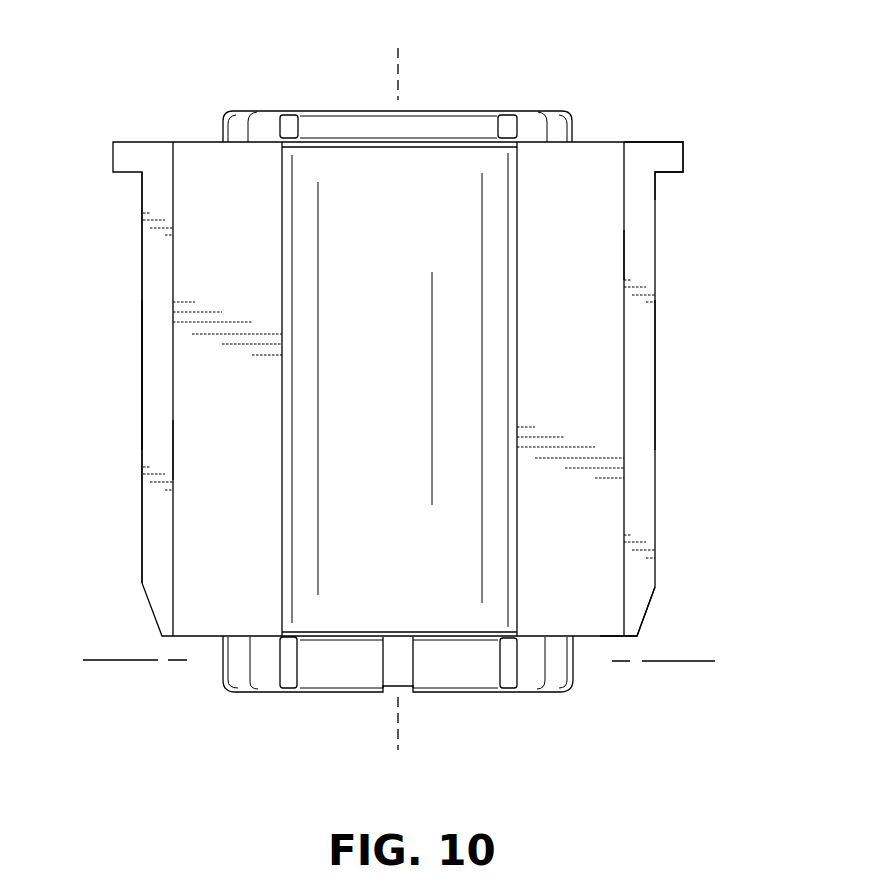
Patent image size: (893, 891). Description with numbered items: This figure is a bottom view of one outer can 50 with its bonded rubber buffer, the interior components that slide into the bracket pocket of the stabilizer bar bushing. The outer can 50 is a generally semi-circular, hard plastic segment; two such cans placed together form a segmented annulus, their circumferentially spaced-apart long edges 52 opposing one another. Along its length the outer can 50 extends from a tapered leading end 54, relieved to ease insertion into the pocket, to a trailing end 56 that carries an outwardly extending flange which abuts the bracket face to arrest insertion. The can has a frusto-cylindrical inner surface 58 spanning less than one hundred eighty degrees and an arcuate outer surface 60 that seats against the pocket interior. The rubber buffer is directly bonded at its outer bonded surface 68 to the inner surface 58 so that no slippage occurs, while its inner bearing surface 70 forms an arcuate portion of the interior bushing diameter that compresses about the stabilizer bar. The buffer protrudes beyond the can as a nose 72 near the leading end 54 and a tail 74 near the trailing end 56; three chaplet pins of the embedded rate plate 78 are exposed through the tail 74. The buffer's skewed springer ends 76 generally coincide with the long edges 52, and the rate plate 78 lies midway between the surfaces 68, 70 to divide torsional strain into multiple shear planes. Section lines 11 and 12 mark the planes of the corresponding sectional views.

The outer can 50 is at (657, 335).
The long edges 52 is at (157, 372).
The leading end 54 is at (638, 636).
The trailing end 56 is at (653, 141).
The inner surface 58 is at (178, 435).
The outer surface 60 is at (142, 497).
The outer bonded surface 68 is at (624, 253).
The inner bearing surface 70 is at (388, 325).
The nose 72 is at (250, 695).
The tail 74 is at (450, 111).
The springer ends 76 is at (238, 239).
The rate plate 78 is at (510, 675).
The section line 11- 11 is at (83, 660).
The section line 12- 12 is at (398, 48).